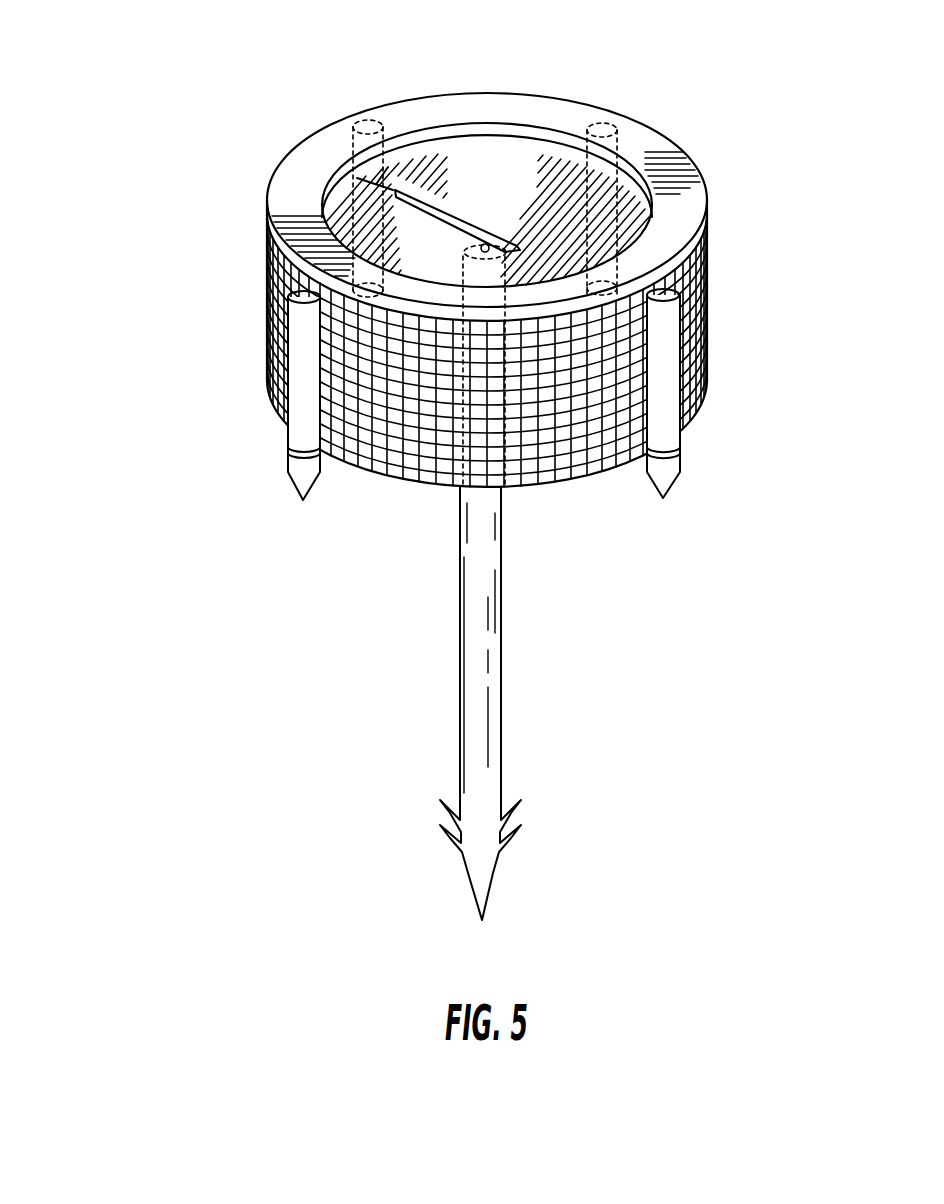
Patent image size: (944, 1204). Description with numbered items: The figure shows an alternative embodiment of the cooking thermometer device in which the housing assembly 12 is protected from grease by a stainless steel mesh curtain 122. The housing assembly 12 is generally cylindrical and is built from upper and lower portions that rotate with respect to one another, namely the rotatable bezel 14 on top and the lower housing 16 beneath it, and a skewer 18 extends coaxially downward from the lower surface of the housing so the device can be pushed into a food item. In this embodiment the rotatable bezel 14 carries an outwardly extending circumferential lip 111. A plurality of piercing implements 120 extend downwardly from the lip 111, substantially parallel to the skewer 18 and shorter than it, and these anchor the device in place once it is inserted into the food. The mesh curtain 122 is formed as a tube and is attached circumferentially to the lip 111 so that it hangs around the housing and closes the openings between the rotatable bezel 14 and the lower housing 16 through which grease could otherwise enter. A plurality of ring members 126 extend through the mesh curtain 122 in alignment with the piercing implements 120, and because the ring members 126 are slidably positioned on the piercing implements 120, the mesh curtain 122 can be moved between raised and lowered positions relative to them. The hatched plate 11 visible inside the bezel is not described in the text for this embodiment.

The disc / target plate 11 is at (479, 148).
The housing assembly 12 is at (595, 193).
The rotatable bezel 14 is at (677, 231).
The lower housing 16 is at (640, 362).
The skewer 18 is at (500, 618).
The circumferential lip 111 is at (688, 168).
The piercing implements 120 is at (660, 288).
The mesh curtain 122 is at (707, 368).
The ring members 126 is at (353, 118).